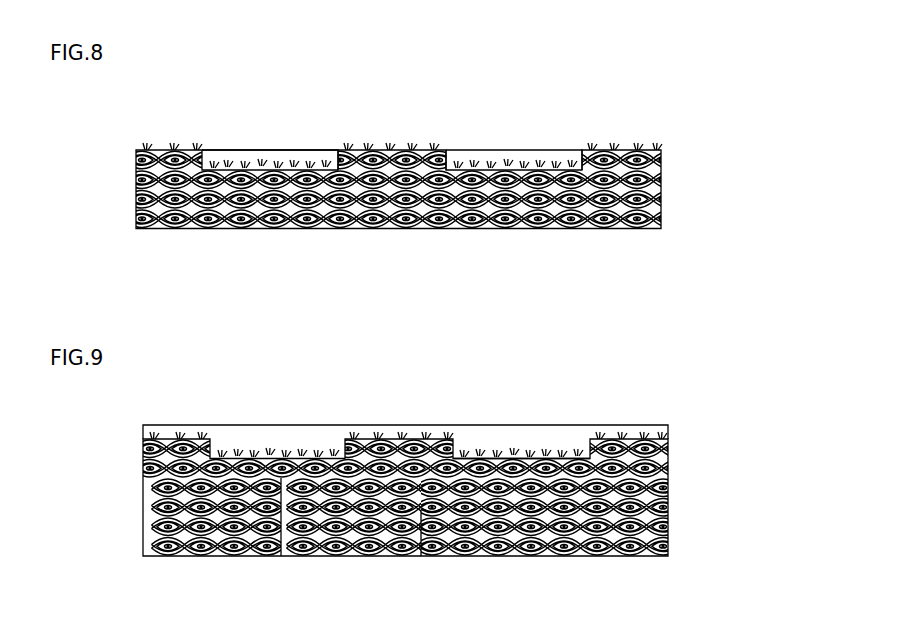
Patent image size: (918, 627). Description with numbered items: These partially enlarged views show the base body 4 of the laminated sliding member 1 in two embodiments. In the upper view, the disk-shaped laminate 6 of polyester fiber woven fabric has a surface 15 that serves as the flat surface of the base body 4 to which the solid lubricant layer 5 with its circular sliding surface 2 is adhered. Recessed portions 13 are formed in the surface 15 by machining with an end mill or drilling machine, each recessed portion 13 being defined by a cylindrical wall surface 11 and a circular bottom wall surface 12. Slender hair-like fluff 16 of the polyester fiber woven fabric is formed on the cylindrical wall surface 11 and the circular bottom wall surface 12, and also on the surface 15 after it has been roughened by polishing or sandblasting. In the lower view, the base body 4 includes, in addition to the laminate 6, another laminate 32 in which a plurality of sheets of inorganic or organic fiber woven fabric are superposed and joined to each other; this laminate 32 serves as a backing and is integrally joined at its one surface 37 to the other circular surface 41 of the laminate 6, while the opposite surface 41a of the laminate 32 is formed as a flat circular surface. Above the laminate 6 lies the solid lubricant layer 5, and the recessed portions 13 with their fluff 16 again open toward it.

In FIG. 9, the laminated sliding member 1 is at (506, 498).
In FIG. 8, the sliding surface 2 is at (406, 182).
In FIG. 9, the base body 4 is at (530, 542).
In FIG. 9, the solid lubricant layer 5 is at (312, 428).
In FIG. 8, the laminate 6 is at (188, 200).
In FIG. 9, the laminate 6 is at (172, 440).
In FIG. 8, the cylindrical wall surface 11 is at (215, 148).
In FIG. 8, the circular bottom wall surface 12 is at (563, 150).
In FIG. 8, the recessed portions 13 is at (275, 160).
In FIG. 9, the recessed portions 13 is at (277, 450).
In FIG. 8, the surface 15 is at (313, 150).
In FIG. 8, the slender hair-like fluff 16 is at (145, 148).
In FIG. 9, the slender hair-like fluff 16 is at (244, 446).
In FIG. 9, the laminate 32 is at (421, 556).
In FIG. 9, the one surface 37 is at (487, 457).
In FIG. 9, the other surface 41 is at (281, 556).
In FIG. 9, the another surface 41a is at (473, 554).